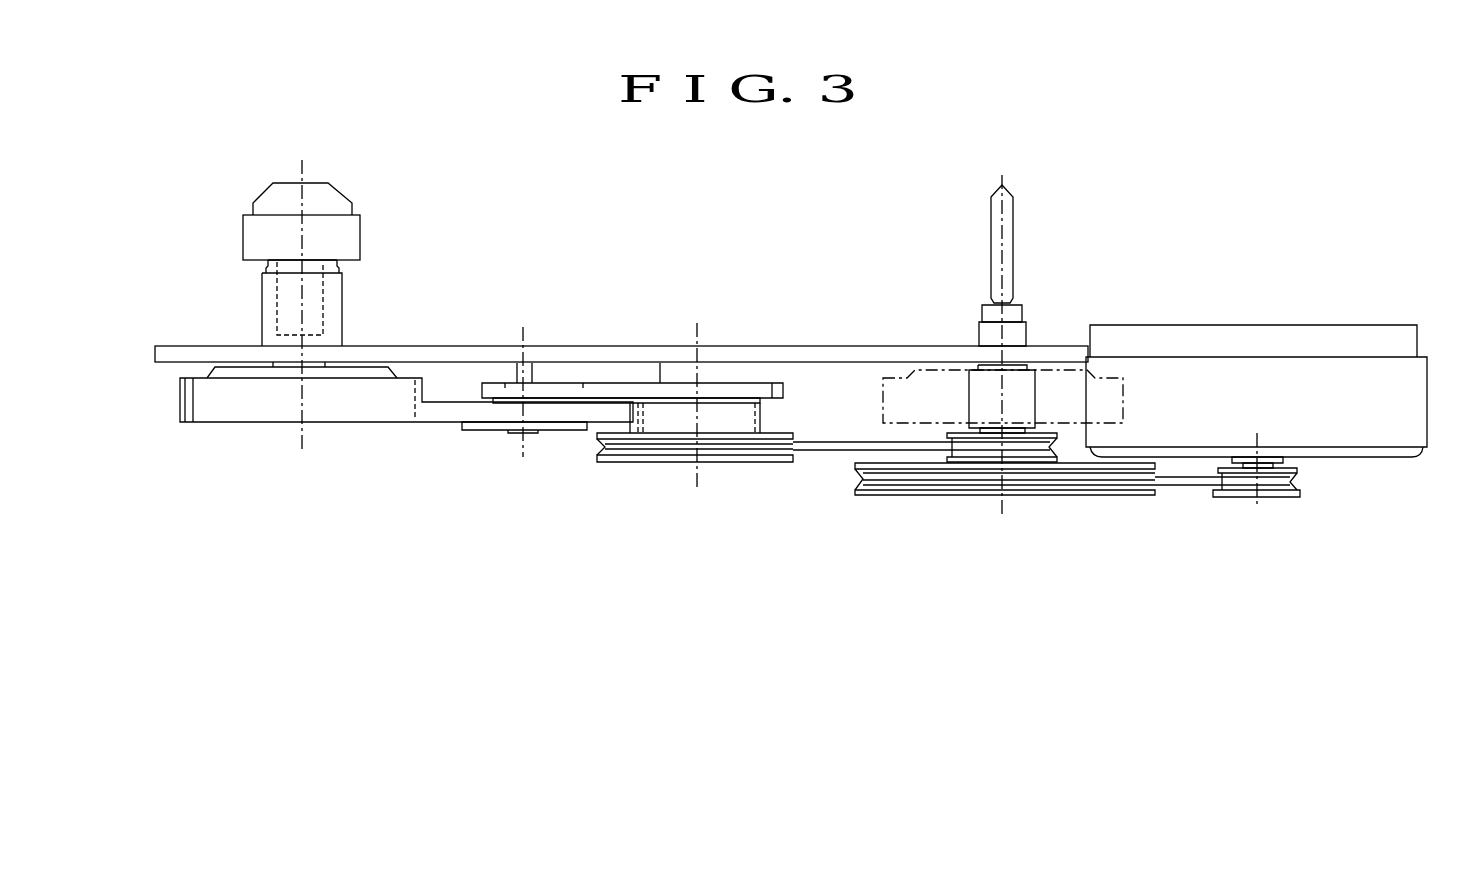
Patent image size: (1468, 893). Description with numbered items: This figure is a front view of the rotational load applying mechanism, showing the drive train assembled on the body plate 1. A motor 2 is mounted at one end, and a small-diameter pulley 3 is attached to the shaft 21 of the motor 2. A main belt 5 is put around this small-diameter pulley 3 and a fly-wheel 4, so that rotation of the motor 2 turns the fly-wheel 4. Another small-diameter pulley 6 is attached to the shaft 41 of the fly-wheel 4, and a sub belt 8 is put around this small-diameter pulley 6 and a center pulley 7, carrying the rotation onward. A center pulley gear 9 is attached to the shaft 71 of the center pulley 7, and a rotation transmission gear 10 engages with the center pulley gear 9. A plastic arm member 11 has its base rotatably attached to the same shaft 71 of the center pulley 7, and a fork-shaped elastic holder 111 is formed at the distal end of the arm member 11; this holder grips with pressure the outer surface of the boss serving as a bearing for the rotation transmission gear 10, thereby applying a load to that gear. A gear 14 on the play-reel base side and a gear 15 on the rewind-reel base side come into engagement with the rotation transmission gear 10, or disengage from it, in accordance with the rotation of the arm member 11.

The body plate 1 is at (825, 350).
The motor 2 is at (1365, 368).
The shaft of the motor 21 is at (1262, 463).
The small-diameter pulley 3 is at (1280, 497).
The fly-wheel 4 is at (1067, 493).
The shaft of the fly-wheel 41 is at (1000, 498).
The main belt 5 is at (1193, 483).
The small-diameter pulley 6 is at (960, 458).
The center pulley 7 is at (633, 461).
The shaft of the center pulley 71 is at (698, 465).
The sub belt 8 is at (823, 453).
The center pulley gear 9 is at (735, 422).
The rotation transmission gear 10 is at (448, 412).
The plastic arm member 11 is at (677, 392).
The fork-shaped elastic holder 111 is at (514, 387).
The gear on the play-reel base side 14 is at (947, 390).
The gear on the rewind-reel base side 15 is at (407, 385).